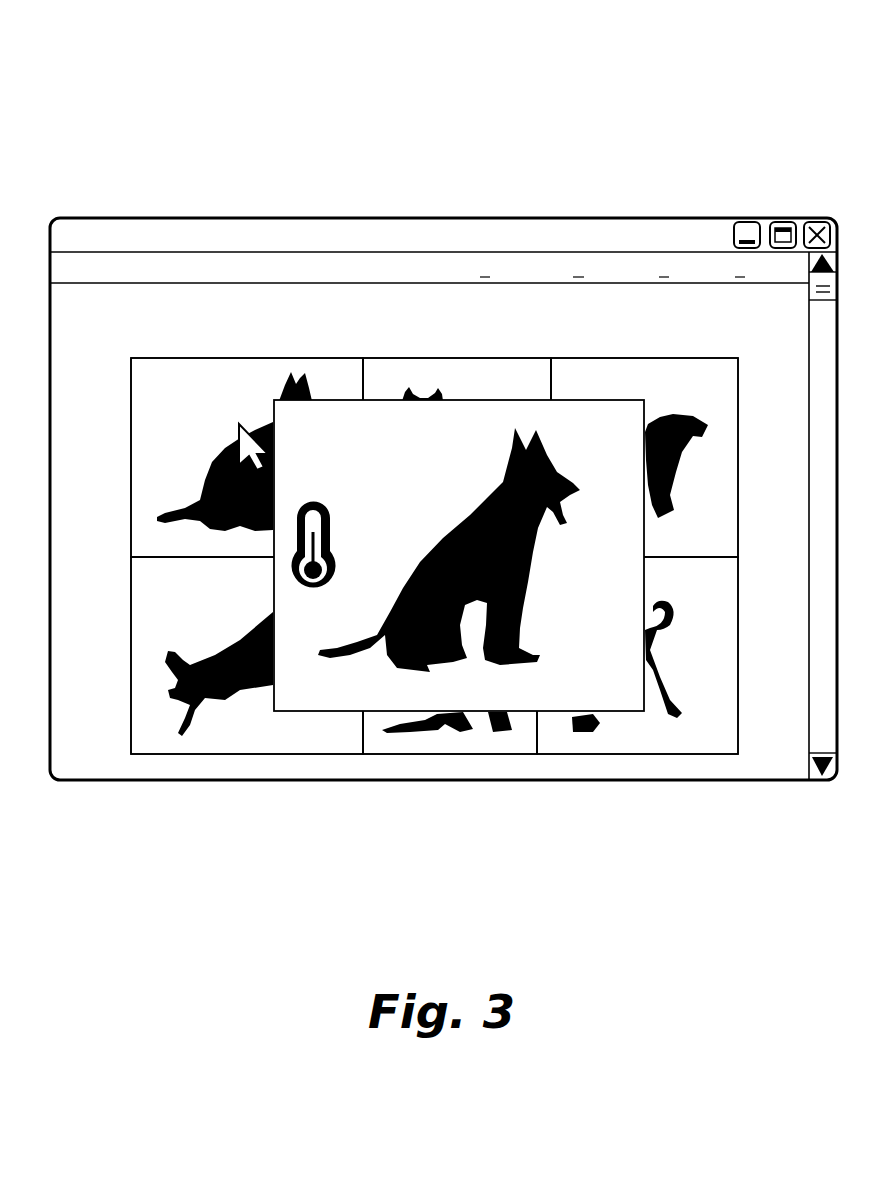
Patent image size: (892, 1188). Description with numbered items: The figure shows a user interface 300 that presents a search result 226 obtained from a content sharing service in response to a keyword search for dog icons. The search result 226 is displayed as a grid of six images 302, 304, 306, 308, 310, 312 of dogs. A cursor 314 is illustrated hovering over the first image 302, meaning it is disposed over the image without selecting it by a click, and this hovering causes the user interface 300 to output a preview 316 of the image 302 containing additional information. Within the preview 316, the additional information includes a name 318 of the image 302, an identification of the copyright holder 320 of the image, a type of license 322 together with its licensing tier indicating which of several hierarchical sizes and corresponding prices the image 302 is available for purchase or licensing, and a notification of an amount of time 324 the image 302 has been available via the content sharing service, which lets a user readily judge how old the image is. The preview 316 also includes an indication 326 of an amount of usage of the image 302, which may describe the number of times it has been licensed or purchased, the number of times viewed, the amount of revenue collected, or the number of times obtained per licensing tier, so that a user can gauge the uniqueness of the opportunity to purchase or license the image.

The user interface 300 is at (146, 62).
The search result 226 is at (407, 334).
The image 302 is at (186, 386).
The image 304 is at (534, 386).
The image 306 is at (720, 386).
The image 308 is at (186, 589).
The image 310 is at (449, 757).
The image 312 is at (720, 589).
The cursor 314 is at (240, 424).
The preview 316 is at (628, 556).
The name 318 is at (310, 428).
The copyright holder 320 is at (565, 428).
The type of license 322 is at (388, 699).
The amount of time 324 is at (531, 690).
The indication of an amount of usage 326 is at (323, 504).